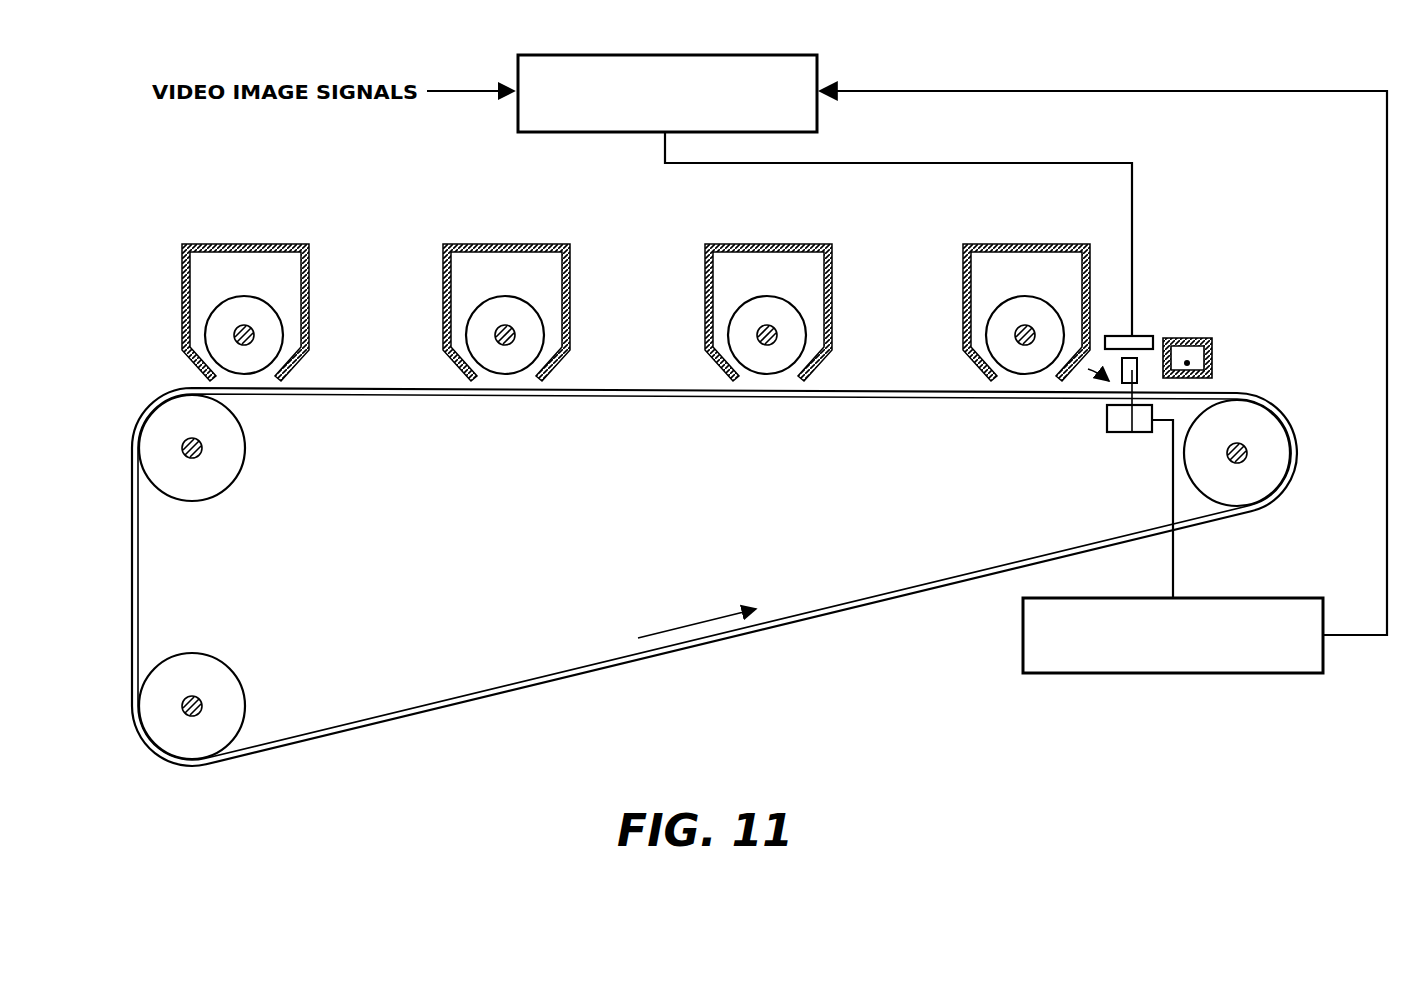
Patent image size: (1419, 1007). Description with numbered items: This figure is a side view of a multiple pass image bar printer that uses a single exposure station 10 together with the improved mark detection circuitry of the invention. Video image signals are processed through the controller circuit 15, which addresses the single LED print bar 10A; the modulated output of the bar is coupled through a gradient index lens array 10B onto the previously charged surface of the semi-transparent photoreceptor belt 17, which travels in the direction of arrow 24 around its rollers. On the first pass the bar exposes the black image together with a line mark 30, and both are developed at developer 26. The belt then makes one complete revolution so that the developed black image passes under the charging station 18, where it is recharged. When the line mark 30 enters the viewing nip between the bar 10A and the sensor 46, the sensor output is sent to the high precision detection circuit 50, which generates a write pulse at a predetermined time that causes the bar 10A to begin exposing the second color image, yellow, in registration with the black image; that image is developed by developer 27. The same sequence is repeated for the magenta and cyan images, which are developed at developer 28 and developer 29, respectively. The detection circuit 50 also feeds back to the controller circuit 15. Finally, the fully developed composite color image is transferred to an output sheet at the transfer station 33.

The controller circuit 15 is at (792, 68).
The developer 29 is at (244, 242).
The developer 28 is at (522, 242).
The developer 27 is at (773, 242).
The developer 26 is at (1035, 242).
The exposure station 10 is at (1105, 304).
The LED print bar 10A is at (1138, 343).
The charging station 18 is at (1200, 337).
The line mark 30 is at (1089, 378).
The gradient index lens array 10B is at (1130, 433).
The sensor 46 is at (1147, 433).
The high precision detection circuit 50 is at (1299, 610).
The transfer station 33 is at (669, 587).
The photoreceptor belt 17 is at (476, 700).
The arrow 24 is at (685, 625).